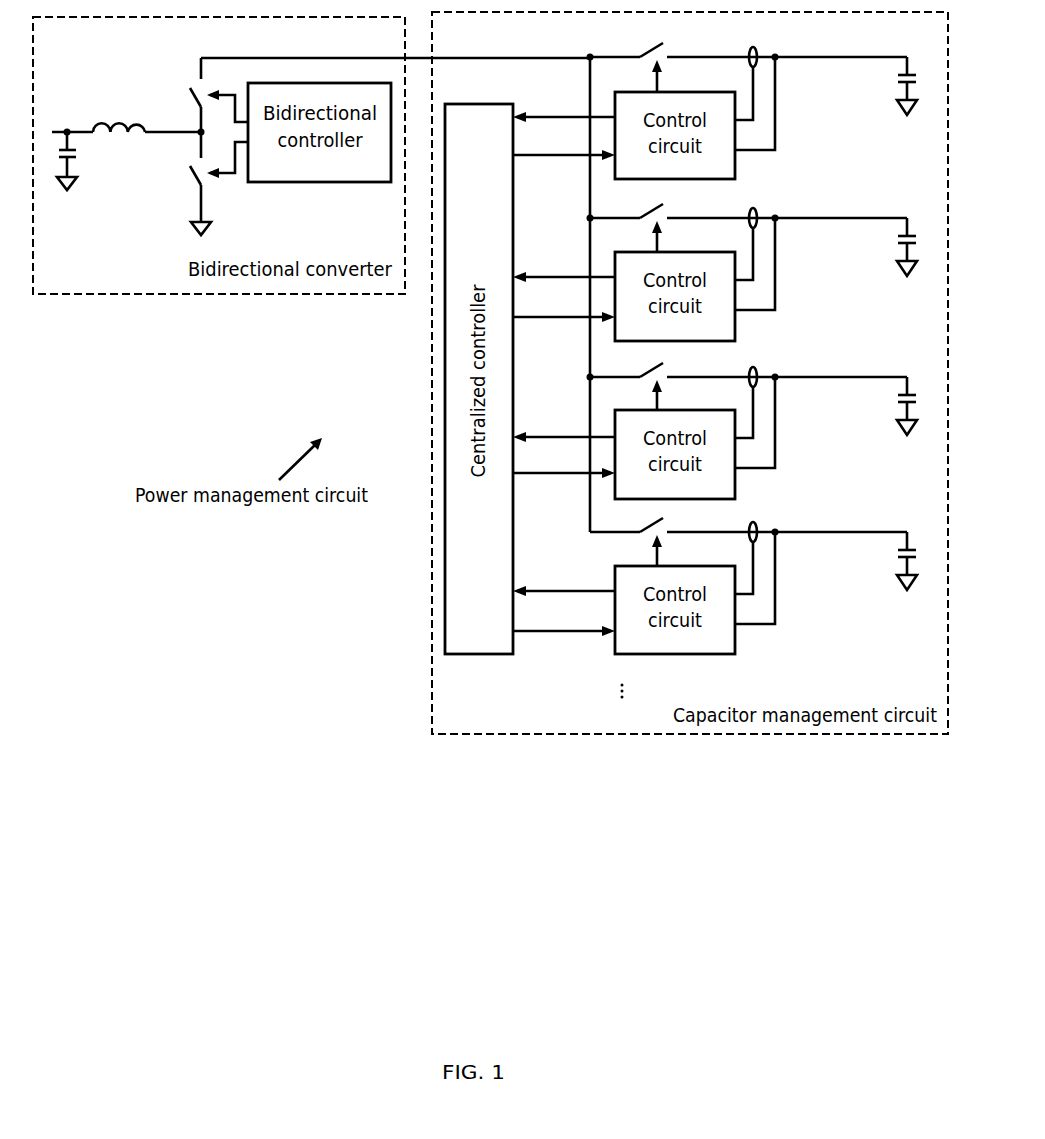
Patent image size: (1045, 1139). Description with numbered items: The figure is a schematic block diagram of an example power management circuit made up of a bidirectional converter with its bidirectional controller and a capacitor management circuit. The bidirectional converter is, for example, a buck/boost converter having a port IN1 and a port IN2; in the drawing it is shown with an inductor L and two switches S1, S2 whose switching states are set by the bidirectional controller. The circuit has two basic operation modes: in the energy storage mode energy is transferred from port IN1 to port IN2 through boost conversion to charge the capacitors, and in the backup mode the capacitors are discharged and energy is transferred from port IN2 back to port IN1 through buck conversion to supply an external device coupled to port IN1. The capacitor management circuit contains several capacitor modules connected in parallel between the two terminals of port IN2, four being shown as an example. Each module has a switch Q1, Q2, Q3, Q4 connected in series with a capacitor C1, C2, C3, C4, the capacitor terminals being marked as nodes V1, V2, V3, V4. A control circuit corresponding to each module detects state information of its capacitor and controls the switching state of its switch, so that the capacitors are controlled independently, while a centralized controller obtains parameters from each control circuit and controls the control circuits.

The port IN1 is at (65, 148).
The inductor L is at (147, 118).
The first switch S1 is at (207, 97).
The second switch S2 is at (207, 183).
The port IN2 is at (538, 281).
The switch Q1 is at (682, 61).
The switch Q2 is at (681, 221).
The switch Q3 is at (681, 380).
The switch Q4 is at (682, 535).
The first capacitor voltage node V1 is at (841, 44).
The second capacitor voltage node V2 is at (841, 205).
The third capacitor voltage node V3 is at (841, 364).
The fourth capacitor voltage node V4 is at (841, 519).
The capacitor C1 is at (920, 86).
The capacitor C2 is at (920, 247).
The capacitor C3 is at (920, 406).
The capacitor C4 is at (920, 561).